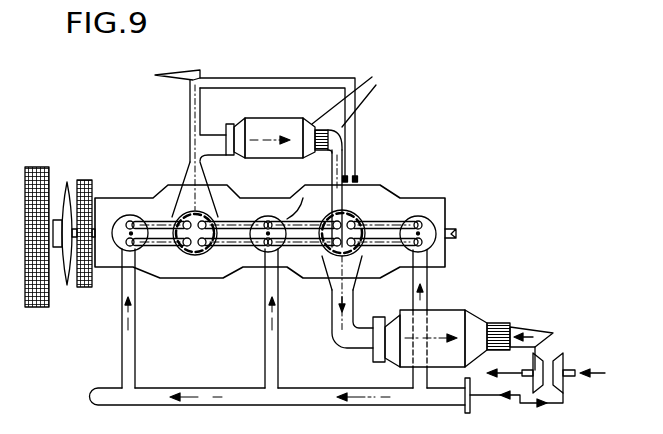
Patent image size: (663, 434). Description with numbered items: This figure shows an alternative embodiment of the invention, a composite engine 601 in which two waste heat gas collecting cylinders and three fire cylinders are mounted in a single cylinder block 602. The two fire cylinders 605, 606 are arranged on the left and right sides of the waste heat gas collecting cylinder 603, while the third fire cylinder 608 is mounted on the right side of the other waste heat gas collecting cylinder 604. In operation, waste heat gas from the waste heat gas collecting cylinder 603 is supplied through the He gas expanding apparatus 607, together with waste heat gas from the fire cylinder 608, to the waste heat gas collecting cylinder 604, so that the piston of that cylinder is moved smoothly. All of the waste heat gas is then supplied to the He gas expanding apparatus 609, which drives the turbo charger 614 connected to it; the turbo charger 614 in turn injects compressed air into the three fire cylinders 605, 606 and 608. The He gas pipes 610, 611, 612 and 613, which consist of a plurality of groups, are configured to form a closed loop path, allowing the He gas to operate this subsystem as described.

The composite engine 601 is at (447, 181).
The cylinder block 602 is at (402, 196).
The waste heat gas collecting cylinder 603 is at (206, 258).
The waste heat gas collecting cylinder 604 is at (333, 272).
The fire cylinder 605 is at (122, 258).
The fire cylinder 606 is at (301, 190).
The He gas expanding apparatus 607 is at (277, 135).
The fire cylinder 608 is at (434, 224).
The He gas expanding apparatus 609 is at (452, 323).
The He gas pipe 610 is at (362, 97).
The He gas pipe 611 is at (155, 75).
The He gas pipe 612 is at (357, 177).
The He gas pipe 613 is at (553, 333).
The turbo charger 614 is at (556, 378).